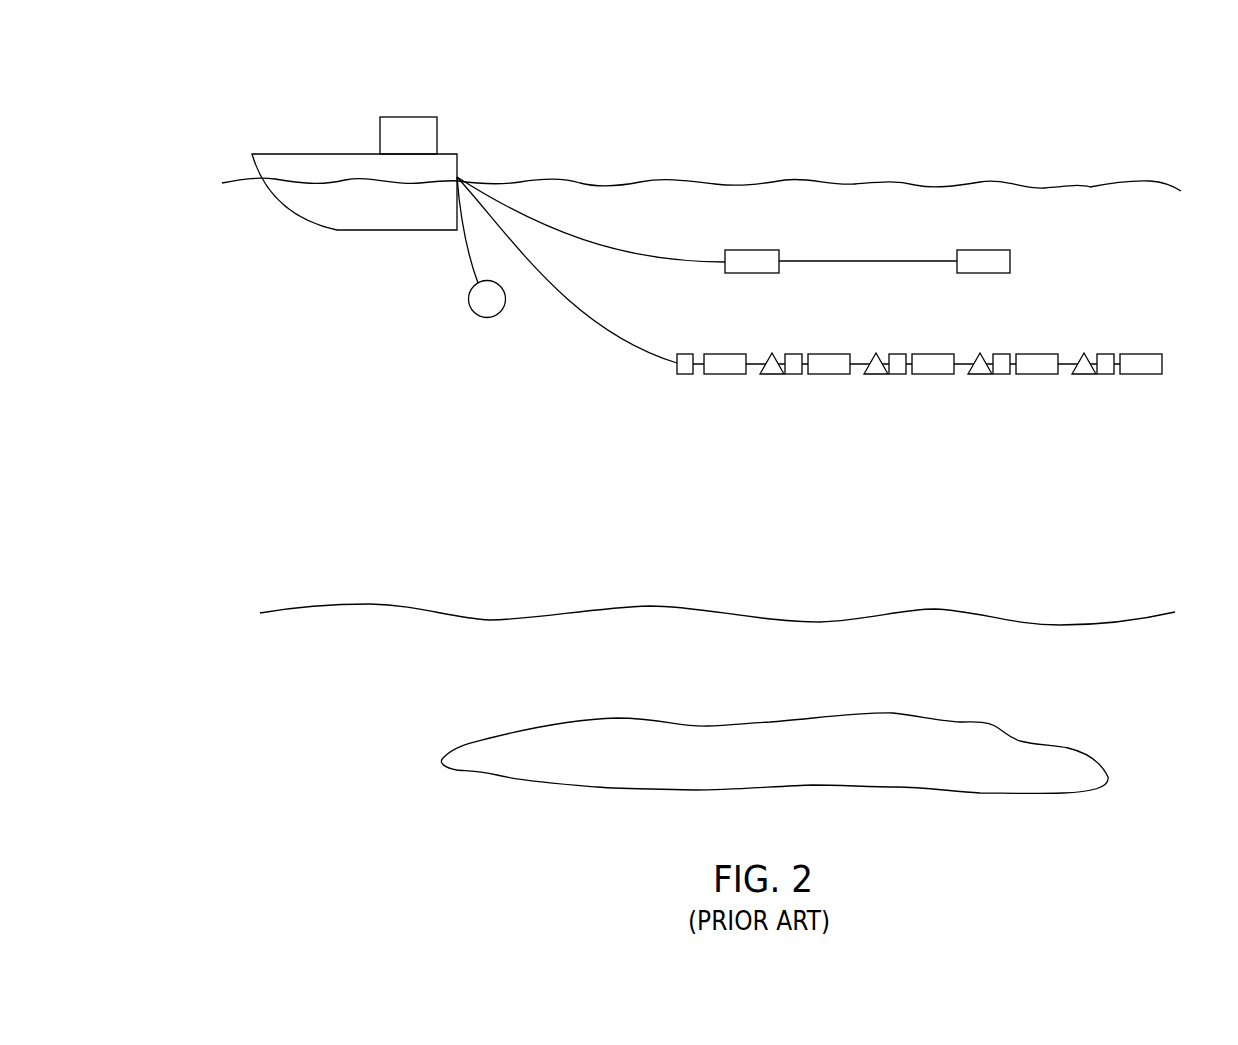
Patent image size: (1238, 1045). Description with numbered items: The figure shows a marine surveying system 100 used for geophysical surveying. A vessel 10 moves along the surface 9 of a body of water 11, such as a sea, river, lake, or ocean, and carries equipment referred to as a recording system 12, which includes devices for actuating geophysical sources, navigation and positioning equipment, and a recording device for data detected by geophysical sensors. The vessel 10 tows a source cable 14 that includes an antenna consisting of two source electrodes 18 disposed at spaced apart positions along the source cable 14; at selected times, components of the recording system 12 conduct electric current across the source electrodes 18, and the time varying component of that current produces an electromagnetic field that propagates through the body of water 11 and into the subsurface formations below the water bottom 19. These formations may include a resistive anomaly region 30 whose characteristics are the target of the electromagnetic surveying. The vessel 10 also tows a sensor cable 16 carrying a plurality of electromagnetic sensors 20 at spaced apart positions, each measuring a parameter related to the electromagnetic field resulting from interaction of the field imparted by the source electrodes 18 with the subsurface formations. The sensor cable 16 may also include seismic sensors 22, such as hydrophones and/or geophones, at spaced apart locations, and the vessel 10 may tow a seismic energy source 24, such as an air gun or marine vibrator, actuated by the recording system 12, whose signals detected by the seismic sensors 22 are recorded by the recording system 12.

The surface 9 is at (1090, 187).
The vessel 10 is at (298, 153).
The body of water 11 is at (307, 408).
The recording system 12 is at (408, 117).
The source cable 14 is at (638, 252).
The sensor cable 16 is at (580, 323).
The source electrodes 18 is at (753, 250).
The water bottom 19 is at (523, 614).
The electromagnetic sensors 20 is at (715, 375).
The seismic sensors 22 is at (772, 375).
The seismic energy source 24 is at (475, 316).
The resistive anomaly region 30 is at (765, 763).
The marine surveying system 100 is at (894, 90).